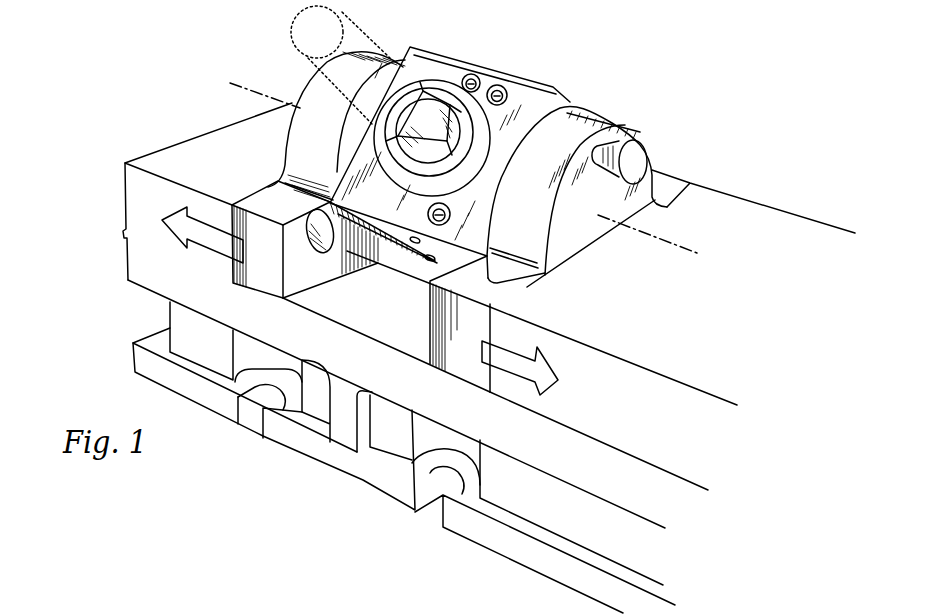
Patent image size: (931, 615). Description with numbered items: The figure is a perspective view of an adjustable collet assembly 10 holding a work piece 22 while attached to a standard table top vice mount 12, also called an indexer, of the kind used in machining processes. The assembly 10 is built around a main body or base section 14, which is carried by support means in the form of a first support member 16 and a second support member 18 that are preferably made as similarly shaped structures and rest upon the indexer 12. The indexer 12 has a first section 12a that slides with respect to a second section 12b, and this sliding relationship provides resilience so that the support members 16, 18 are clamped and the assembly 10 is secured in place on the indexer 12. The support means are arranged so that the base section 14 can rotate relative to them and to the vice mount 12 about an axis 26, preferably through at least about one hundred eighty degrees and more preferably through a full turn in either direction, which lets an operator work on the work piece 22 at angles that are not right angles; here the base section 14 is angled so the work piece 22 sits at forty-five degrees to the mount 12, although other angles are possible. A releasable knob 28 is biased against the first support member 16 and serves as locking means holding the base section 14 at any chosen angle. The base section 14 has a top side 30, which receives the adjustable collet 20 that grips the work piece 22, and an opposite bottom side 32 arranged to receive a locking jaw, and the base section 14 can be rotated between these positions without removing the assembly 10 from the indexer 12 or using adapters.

The collet assembly 10 is at (594, 60).
The vice mount 12 is at (415, 393).
The first section 12a is at (617, 402).
The second section 12b is at (147, 192).
The base section 14 is at (532, 90).
The first support member 16 is at (607, 117).
The second support member 18 is at (290, 108).
The adjustable collet 20 is at (447, 93).
The work piece 22 is at (292, 44).
The axis 26 is at (461, 170).
The releasable knob 28 is at (646, 140).
The top side 30 is at (287, 170).
The bottom side 32 is at (387, 260).